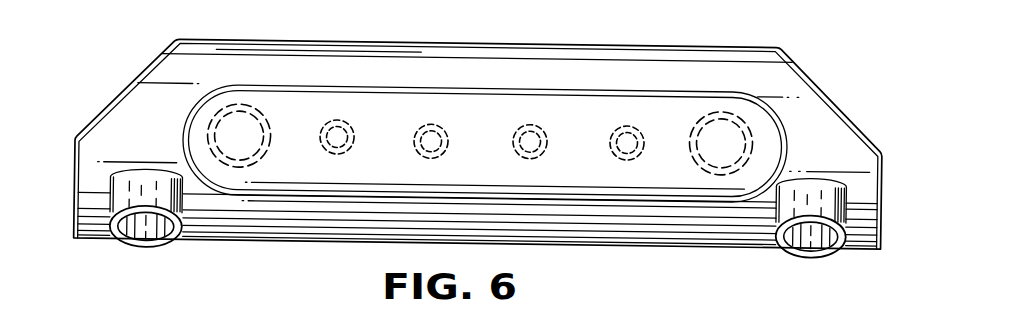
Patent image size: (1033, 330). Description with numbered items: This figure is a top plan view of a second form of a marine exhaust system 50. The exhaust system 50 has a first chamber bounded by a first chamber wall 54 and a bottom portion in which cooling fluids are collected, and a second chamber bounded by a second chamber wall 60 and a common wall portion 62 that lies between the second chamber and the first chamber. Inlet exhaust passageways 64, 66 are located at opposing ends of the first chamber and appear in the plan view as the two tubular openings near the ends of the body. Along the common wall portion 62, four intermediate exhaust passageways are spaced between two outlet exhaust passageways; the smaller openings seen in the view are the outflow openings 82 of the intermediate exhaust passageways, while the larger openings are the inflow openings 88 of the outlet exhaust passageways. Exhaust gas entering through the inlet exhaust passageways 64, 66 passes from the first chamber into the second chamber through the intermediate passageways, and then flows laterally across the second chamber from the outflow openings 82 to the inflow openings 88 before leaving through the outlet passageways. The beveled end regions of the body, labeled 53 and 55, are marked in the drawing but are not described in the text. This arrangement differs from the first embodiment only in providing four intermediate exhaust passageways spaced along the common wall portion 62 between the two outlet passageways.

The exhaust system 50 is at (811, 52).
The left beveled end face 53 is at (127, 98).
The first chamber wall 54 is at (212, 66).
The right beveled end face 55 is at (821, 94).
The second chamber wall 60 is at (415, 98).
The common wall portion 62 is at (522, 107).
The inlet exhaust passageway 64 is at (829, 188).
The inlet exhaust passageway 66 is at (137, 182).
The outflow openings 82 is at (417, 131).
The inflow openings 88 is at (270, 127).